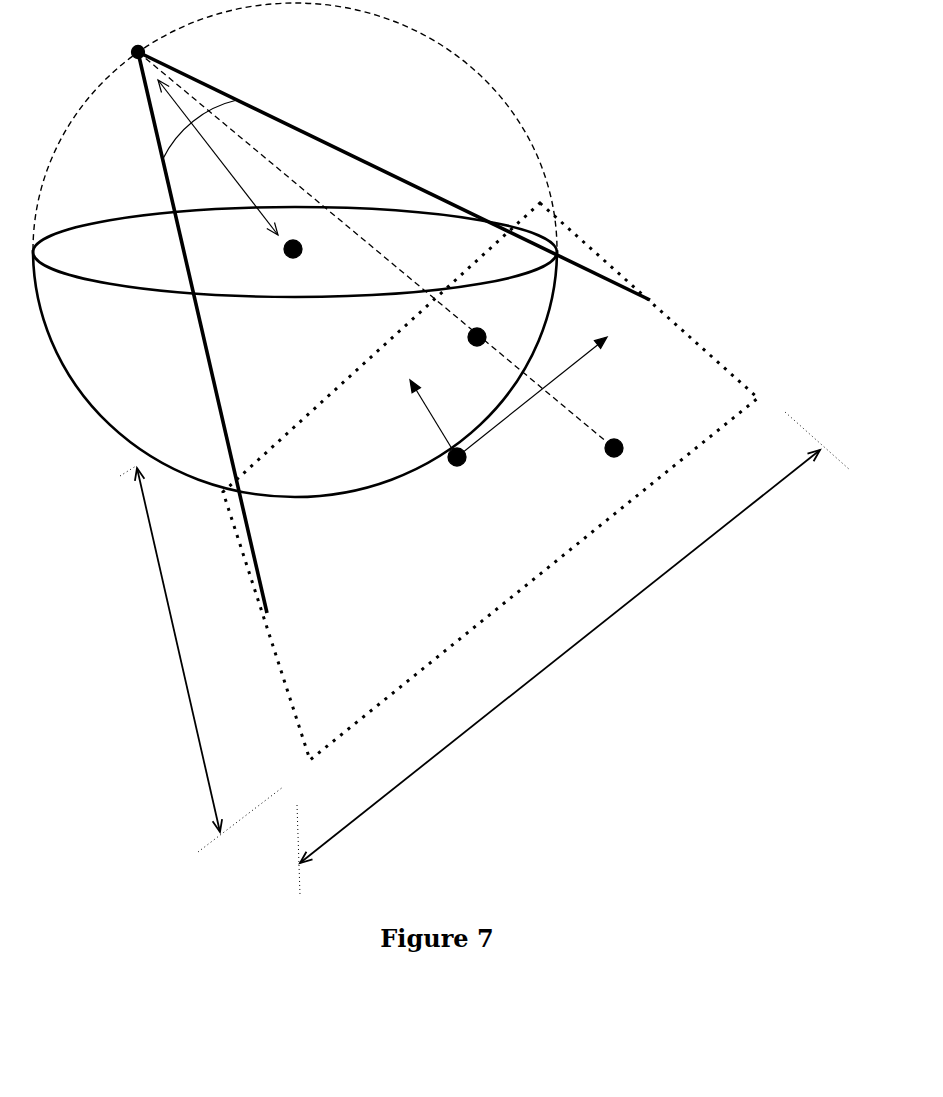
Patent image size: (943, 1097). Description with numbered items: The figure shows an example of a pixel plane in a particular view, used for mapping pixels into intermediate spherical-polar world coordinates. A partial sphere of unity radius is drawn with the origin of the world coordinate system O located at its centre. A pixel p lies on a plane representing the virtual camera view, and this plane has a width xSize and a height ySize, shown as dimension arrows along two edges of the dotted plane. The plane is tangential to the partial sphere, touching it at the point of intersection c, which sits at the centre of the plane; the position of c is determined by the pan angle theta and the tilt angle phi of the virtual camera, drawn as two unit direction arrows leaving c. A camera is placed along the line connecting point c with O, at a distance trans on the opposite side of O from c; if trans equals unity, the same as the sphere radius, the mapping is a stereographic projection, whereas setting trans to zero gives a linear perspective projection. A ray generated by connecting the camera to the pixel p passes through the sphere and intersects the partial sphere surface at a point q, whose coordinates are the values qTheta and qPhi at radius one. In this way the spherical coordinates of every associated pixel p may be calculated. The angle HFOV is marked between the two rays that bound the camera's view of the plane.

The element camera is at (98, 42).
The horizontal field of view angle HFOV is at (167, 133).
The distance trans is at (218, 160).
The origin of the world coordinate system O is at (284, 262).
The point q is at (485, 335).
The point of intersection c is at (457, 471).
The pixel p is at (626, 449).
The element theta is at (557, 396).
The element phi is at (426, 418).
The element xSize is at (573, 653).
The element ySize is at (169, 659).